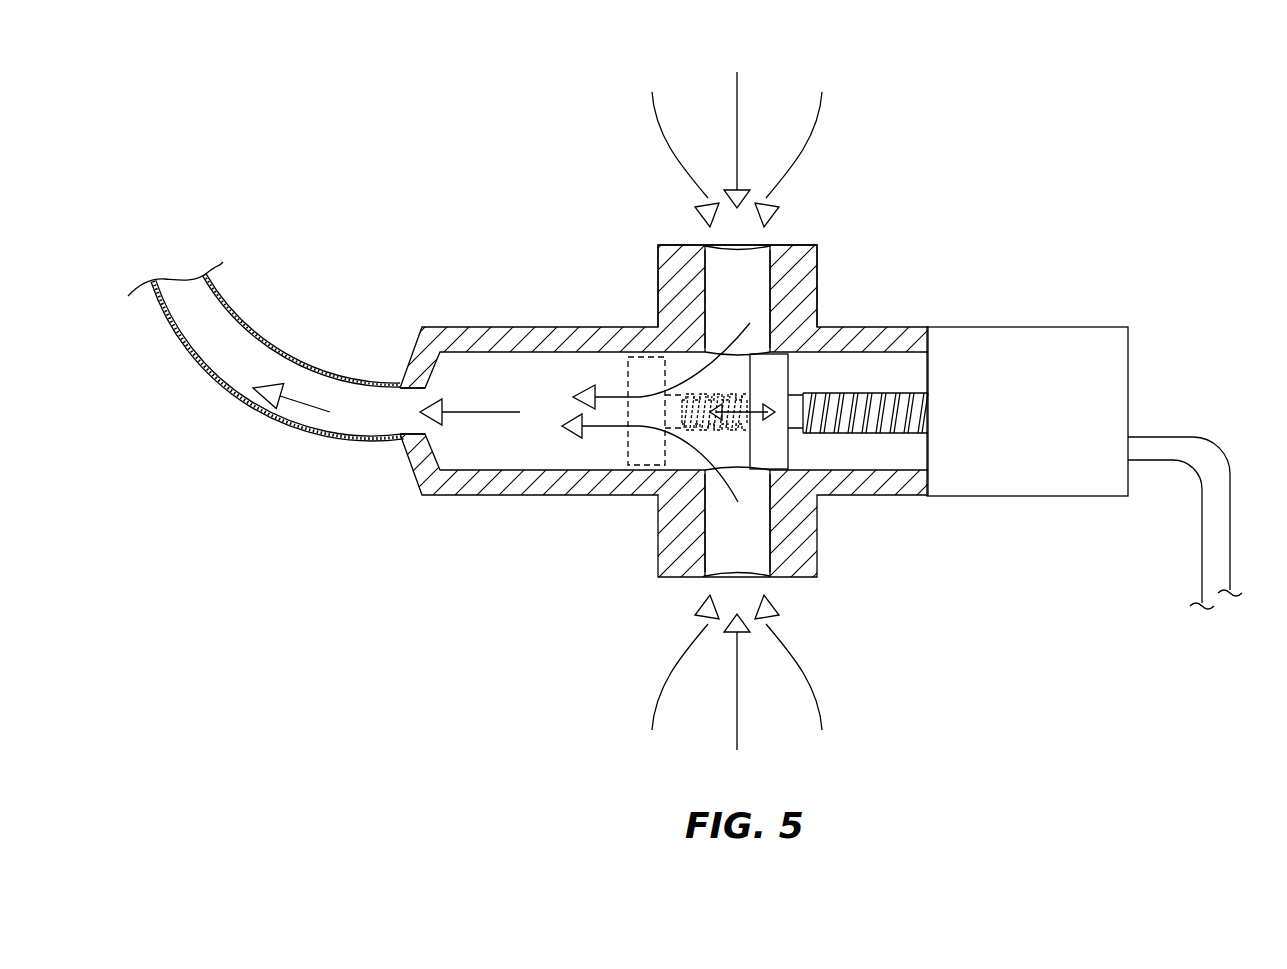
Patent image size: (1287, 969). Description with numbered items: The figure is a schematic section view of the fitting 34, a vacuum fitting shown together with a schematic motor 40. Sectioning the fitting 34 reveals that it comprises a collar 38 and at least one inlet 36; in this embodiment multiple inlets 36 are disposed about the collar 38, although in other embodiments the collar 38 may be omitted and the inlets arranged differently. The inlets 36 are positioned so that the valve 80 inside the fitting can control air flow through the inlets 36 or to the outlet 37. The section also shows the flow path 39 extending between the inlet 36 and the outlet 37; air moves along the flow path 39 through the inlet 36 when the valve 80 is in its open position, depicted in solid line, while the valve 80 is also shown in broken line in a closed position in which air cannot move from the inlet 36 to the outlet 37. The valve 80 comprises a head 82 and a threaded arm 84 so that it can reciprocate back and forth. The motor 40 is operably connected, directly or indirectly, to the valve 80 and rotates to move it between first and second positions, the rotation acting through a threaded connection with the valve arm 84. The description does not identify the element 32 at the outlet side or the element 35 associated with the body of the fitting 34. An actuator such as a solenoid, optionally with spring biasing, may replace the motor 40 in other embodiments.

The conduit 32 is at (208, 322).
The fitting 34 is at (1102, 129).
The valve body 35 is at (877, 522).
The inlet 36 is at (762, 250).
The outlet 37 is at (413, 412).
The collar 38 is at (813, 277).
The flow path 39 is at (593, 456).
The motor 40 is at (1067, 347).
The valve 80 is at (845, 366).
The head 82 is at (770, 385).
The threaded arm 84 is at (840, 432).